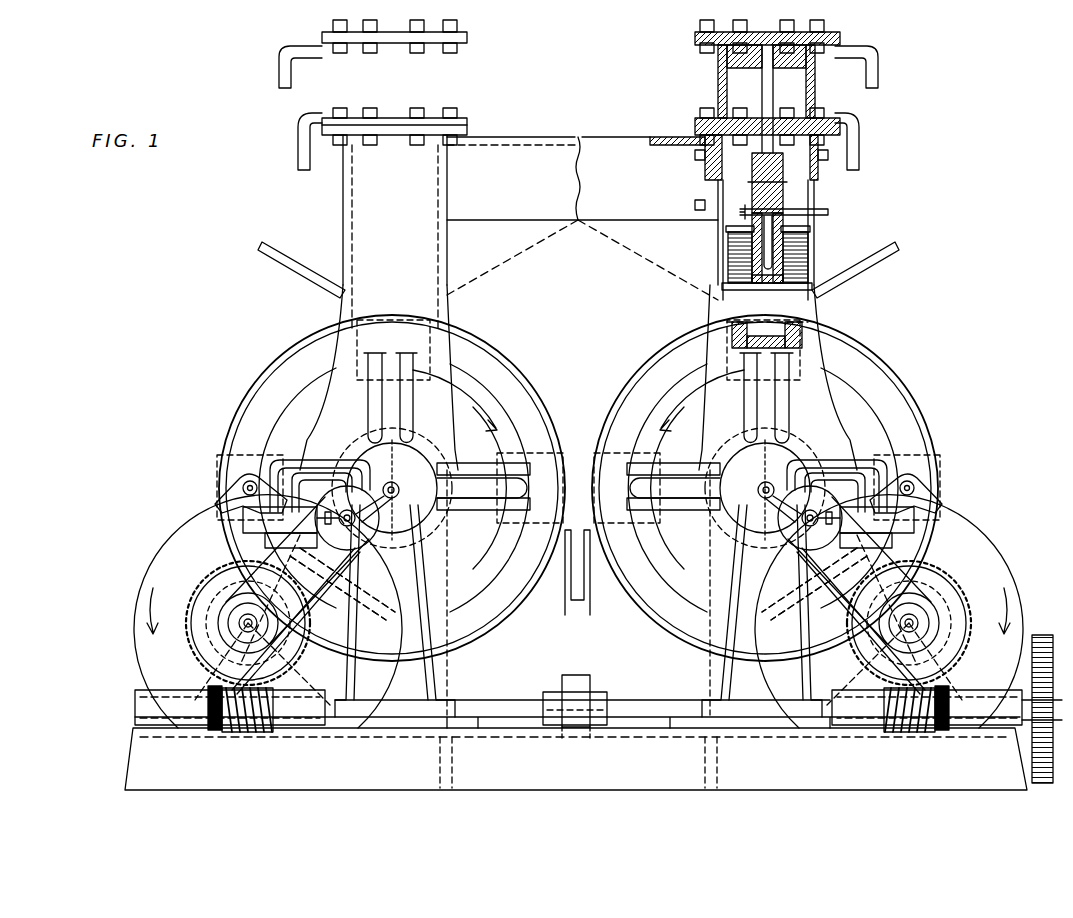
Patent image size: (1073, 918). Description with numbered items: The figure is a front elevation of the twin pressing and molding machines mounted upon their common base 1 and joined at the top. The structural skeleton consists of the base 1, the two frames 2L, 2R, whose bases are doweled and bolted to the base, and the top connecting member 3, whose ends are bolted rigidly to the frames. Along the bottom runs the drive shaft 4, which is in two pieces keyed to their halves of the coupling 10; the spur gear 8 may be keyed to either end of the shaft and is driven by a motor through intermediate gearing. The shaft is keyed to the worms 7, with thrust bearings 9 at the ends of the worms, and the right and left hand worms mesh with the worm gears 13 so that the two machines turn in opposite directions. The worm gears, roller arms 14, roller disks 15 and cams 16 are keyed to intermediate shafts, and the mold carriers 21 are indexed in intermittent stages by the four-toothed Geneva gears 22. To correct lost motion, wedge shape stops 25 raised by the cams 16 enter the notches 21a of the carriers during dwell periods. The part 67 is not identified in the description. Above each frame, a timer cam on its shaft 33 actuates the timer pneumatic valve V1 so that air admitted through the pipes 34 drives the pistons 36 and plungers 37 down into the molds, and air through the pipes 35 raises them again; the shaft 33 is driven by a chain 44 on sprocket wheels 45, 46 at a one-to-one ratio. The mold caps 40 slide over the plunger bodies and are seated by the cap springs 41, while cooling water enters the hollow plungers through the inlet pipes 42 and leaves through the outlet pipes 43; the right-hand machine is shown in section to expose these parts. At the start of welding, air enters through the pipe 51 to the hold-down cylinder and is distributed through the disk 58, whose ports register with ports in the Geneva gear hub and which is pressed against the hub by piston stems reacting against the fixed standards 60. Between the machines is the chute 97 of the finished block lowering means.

The common base 1 is at (135, 742).
The frame 2L is at (343, 295).
The frame 2R is at (818, 300).
The top connecting member 3 is at (540, 137).
The drive shaft 4 is at (633, 708).
The worm 7 is at (250, 735).
The spur gear 8 is at (1045, 785).
The thrust bearing 9 is at (215, 732).
The coupling 10 is at (598, 695).
The worm gear 13 is at (195, 648).
The roller arm 14 is at (242, 502).
The roller disk 15 is at (152, 578).
The cam 16 is at (578, 629).
The mold carrier 21 is at (240, 402).
The notch 21a is at (578, 358).
The Geneva gear 22 is at (468, 520).
The wedge shape stop 25 is at (578, 620).
The timer shaft 33 is at (396, 496).
The pipe 34 is at (283, 68).
The pipe 35 is at (298, 165).
The piston 36 is at (785, 62).
The plunger 37 is at (725, 247).
The mold cap 40 is at (800, 292).
The cap spring 41 is at (728, 265).
The inlet pipe 42 is at (810, 216).
The outlet pipe 43 is at (740, 212).
The chain 44 is at (578, 591).
The sprocket wheel 45 is at (581, 588).
The sprocket wheel 46 is at (578, 565).
The pipe 51 is at (278, 452).
The disk 58 is at (425, 480).
The fixed standard 60 is at (415, 690).
The dial face 67 is at (305, 362).
The chute 97 is at (582, 610).
The timer pneumatic valve V1 is at (583, 531).